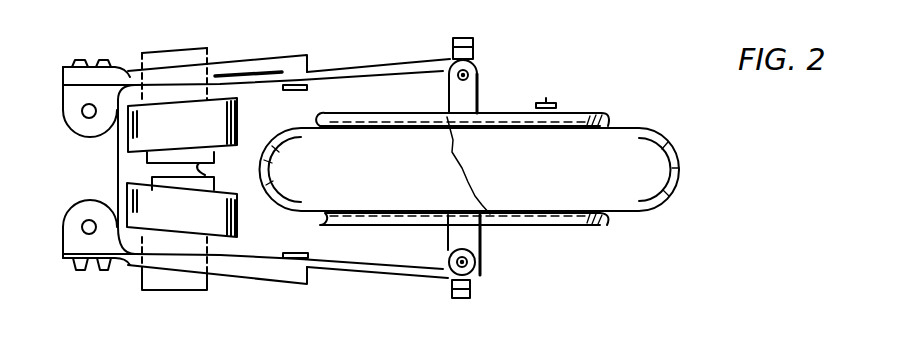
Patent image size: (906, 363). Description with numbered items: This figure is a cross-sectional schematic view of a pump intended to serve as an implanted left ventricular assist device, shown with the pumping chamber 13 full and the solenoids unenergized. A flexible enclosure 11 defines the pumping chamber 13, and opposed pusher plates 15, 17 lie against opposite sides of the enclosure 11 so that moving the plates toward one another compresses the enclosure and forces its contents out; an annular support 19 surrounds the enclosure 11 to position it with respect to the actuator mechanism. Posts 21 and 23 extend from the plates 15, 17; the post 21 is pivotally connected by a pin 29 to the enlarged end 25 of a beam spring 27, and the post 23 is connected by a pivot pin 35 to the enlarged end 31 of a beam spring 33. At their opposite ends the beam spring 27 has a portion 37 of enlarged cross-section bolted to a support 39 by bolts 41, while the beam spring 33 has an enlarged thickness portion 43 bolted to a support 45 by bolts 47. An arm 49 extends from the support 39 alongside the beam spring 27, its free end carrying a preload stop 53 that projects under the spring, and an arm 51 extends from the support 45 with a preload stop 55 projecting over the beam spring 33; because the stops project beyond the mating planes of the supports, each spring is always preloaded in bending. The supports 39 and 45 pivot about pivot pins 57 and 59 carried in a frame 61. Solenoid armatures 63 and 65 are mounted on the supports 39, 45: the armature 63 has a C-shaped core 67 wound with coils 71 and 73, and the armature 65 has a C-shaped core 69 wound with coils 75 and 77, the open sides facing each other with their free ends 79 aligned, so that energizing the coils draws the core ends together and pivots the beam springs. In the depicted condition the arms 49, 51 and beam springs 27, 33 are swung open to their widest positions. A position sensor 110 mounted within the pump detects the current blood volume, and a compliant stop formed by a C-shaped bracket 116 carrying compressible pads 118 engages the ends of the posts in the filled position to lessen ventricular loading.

The enclosure 11 is at (299, 208).
The pumping chamber 13 is at (336, 173).
The pusher plate 15 is at (598, 116).
The pusher plate 17 is at (560, 222).
The annular support 19 is at (679, 164).
The post 21 is at (474, 99).
The post 23 is at (453, 240).
The enlarged end 25 is at (444, 73).
The beam spring 27 is at (347, 72).
The pin 29 is at (470, 76).
The enlarged end 31 is at (446, 278).
The beam spring 33 is at (372, 272).
The pivot pin 35 is at (474, 263).
The portion of slightly enlarged cross-section 37 is at (63, 72).
The support 39 is at (63, 100).
The bolt 41 is at (103, 45).
The enlarged thickness portion 43 is at (63, 261).
The support 45 is at (63, 247).
The bolt 47 is at (80, 271).
The arm 49 is at (277, 55).
The arm 51 is at (257, 280).
The preload stop 53 is at (303, 89).
The preload stop 55 is at (303, 257).
The pivot pin 57 is at (80, 114).
The pivot pin 59 is at (80, 228).
The frame 61 is at (94, 168).
The solenoid armature 63 is at (196, 85).
The solenoid armature 65 is at (195, 256).
The C-shaped core 67 is at (188, 52).
The C-shaped core 69 is at (144, 284).
The coil 71 is at (223, 113).
The coil 73 is at (197, 122).
The coil 75 is at (223, 232).
The coil 77 is at (197, 223).
The free ends 79 is at (206, 172).
The position sensor 110 is at (546, 100).
The C-shaped bracket 116 is at (474, 40).
The pad 118 is at (474, 51).